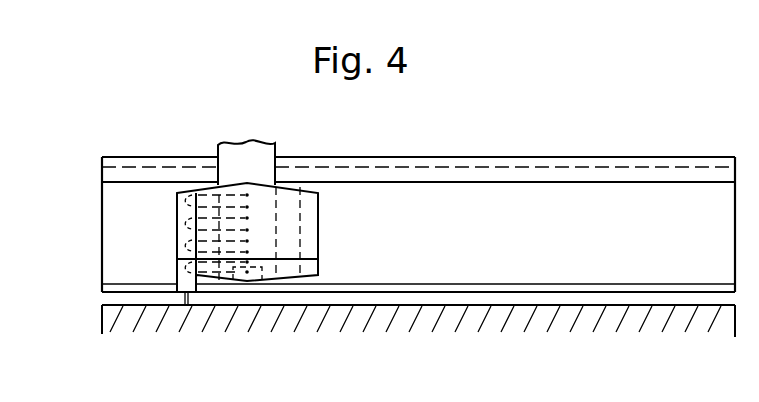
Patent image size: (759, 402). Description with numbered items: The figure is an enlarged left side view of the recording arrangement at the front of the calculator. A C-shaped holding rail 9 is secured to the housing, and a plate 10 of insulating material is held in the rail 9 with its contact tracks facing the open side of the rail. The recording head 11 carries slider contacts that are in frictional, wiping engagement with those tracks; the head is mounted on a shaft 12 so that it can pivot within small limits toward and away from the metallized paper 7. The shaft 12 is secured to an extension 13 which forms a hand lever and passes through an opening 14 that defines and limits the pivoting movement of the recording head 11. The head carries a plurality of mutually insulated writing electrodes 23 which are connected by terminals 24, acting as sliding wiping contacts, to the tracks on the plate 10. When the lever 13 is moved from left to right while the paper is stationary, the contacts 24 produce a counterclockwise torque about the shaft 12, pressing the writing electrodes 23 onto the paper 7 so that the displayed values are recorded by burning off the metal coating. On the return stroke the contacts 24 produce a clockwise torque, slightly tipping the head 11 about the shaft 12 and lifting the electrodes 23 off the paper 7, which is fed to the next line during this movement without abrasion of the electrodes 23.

The sheet 7 is at (690, 304).
The C-shaped holding rail 9 is at (688, 176).
The plate of insulating material 10 is at (610, 205).
The recording head 11 is at (308, 230).
The shaft 12 is at (250, 279).
The extension 13 is at (252, 168).
The opening 14 is at (292, 244).
The writing electrodes 23 is at (192, 238).
The terminals 24 is at (246, 220).